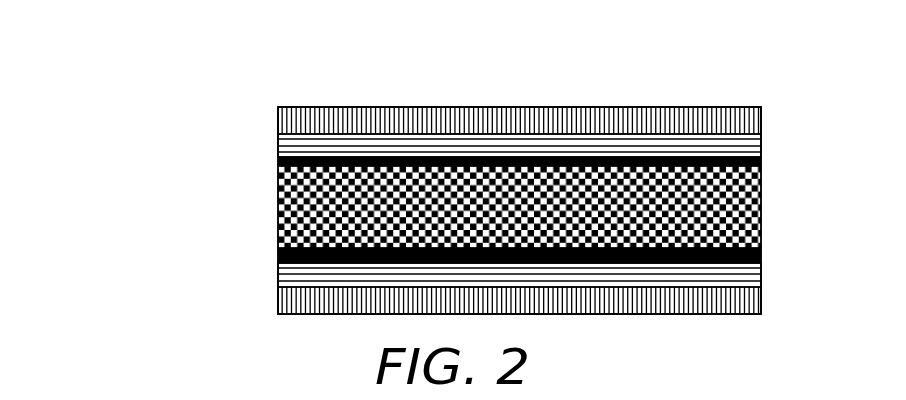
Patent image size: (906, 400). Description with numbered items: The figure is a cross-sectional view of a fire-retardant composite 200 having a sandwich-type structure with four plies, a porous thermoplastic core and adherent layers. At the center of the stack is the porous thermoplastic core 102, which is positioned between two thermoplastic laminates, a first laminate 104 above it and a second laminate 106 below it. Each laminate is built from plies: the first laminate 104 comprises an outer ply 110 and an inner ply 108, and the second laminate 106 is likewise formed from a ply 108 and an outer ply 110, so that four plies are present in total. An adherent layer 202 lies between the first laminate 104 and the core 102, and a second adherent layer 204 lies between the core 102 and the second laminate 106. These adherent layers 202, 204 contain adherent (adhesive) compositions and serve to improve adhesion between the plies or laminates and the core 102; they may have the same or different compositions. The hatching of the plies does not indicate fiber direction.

The composite 200 is at (137, 65).
The ply 110 is at (297, 125).
The ply 108 is at (313, 149).
The adherent layer 202 is at (279, 164).
The porous thermoplastic core 102 is at (296, 238).
The adherent layer 204 is at (282, 249).
The first laminate 104 is at (777, 108).
The second laminate 106 is at (775, 263).